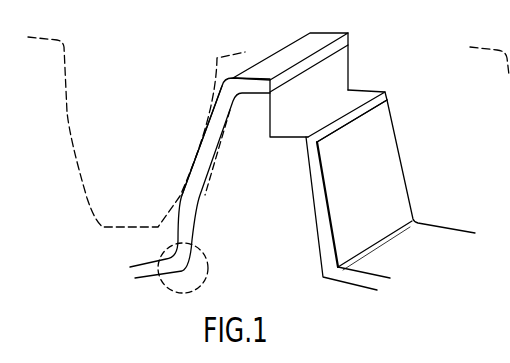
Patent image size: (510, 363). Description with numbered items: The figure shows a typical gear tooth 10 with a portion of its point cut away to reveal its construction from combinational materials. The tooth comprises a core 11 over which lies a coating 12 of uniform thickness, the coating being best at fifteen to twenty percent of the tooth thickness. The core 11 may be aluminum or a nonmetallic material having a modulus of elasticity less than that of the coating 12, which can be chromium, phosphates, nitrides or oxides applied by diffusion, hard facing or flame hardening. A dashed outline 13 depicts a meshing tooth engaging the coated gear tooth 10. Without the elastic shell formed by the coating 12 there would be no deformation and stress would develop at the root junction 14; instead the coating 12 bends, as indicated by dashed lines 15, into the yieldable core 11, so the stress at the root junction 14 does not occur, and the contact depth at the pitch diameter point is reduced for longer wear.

The gear tooth 10 is at (410, 156).
The core 11 is at (343, 73).
The coating 12 is at (343, 45).
The dashed outline 13 is at (139, 141).
The root junction 14 is at (208, 277).
The dashed lines 15 is at (207, 178).